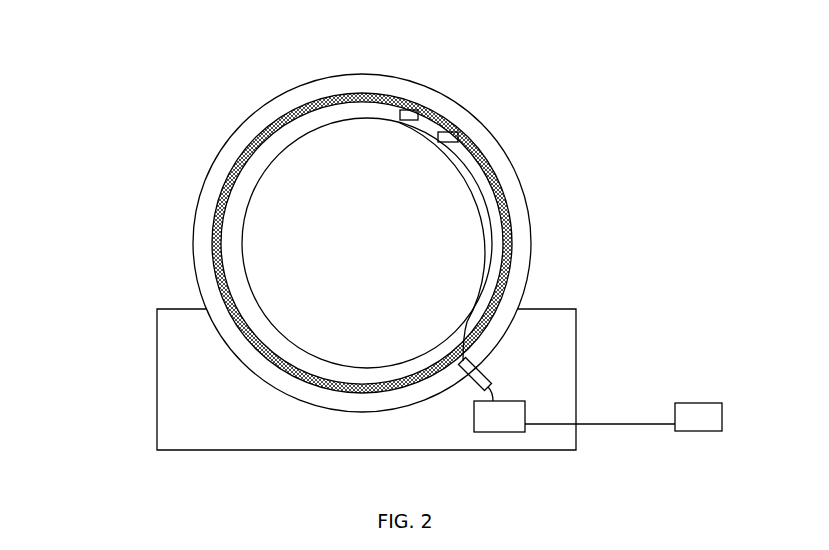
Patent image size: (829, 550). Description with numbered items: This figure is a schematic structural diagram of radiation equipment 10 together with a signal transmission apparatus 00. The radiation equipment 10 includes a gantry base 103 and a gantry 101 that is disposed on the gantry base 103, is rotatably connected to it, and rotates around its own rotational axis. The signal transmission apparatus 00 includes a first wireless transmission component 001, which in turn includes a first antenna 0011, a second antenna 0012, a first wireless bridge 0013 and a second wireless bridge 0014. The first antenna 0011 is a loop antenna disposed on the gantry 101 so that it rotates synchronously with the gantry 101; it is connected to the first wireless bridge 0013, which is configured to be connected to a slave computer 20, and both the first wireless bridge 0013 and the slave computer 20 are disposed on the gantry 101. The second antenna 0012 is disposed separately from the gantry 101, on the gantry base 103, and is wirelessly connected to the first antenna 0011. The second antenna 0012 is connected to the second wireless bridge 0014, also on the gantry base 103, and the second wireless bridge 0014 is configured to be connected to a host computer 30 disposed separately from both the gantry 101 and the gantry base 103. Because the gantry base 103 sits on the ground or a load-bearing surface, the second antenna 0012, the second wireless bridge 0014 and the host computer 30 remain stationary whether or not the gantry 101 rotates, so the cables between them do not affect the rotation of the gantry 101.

The signal transmission apparatus 00 is at (719, 294).
The radiation equipment 10 is at (92, 250).
The gantry 101 is at (210, 276).
The gantry base 103 is at (195, 338).
The first wireless transmission component 001 is at (662, 208).
The first antenna 0011 is at (518, 242).
The second antenna 0012 is at (486, 369).
The first wireless bridge 0013 is at (461, 145).
The second wireless bridge 0014 is at (528, 403).
The slave computer 20 is at (402, 108).
The host computer 30 is at (724, 417).